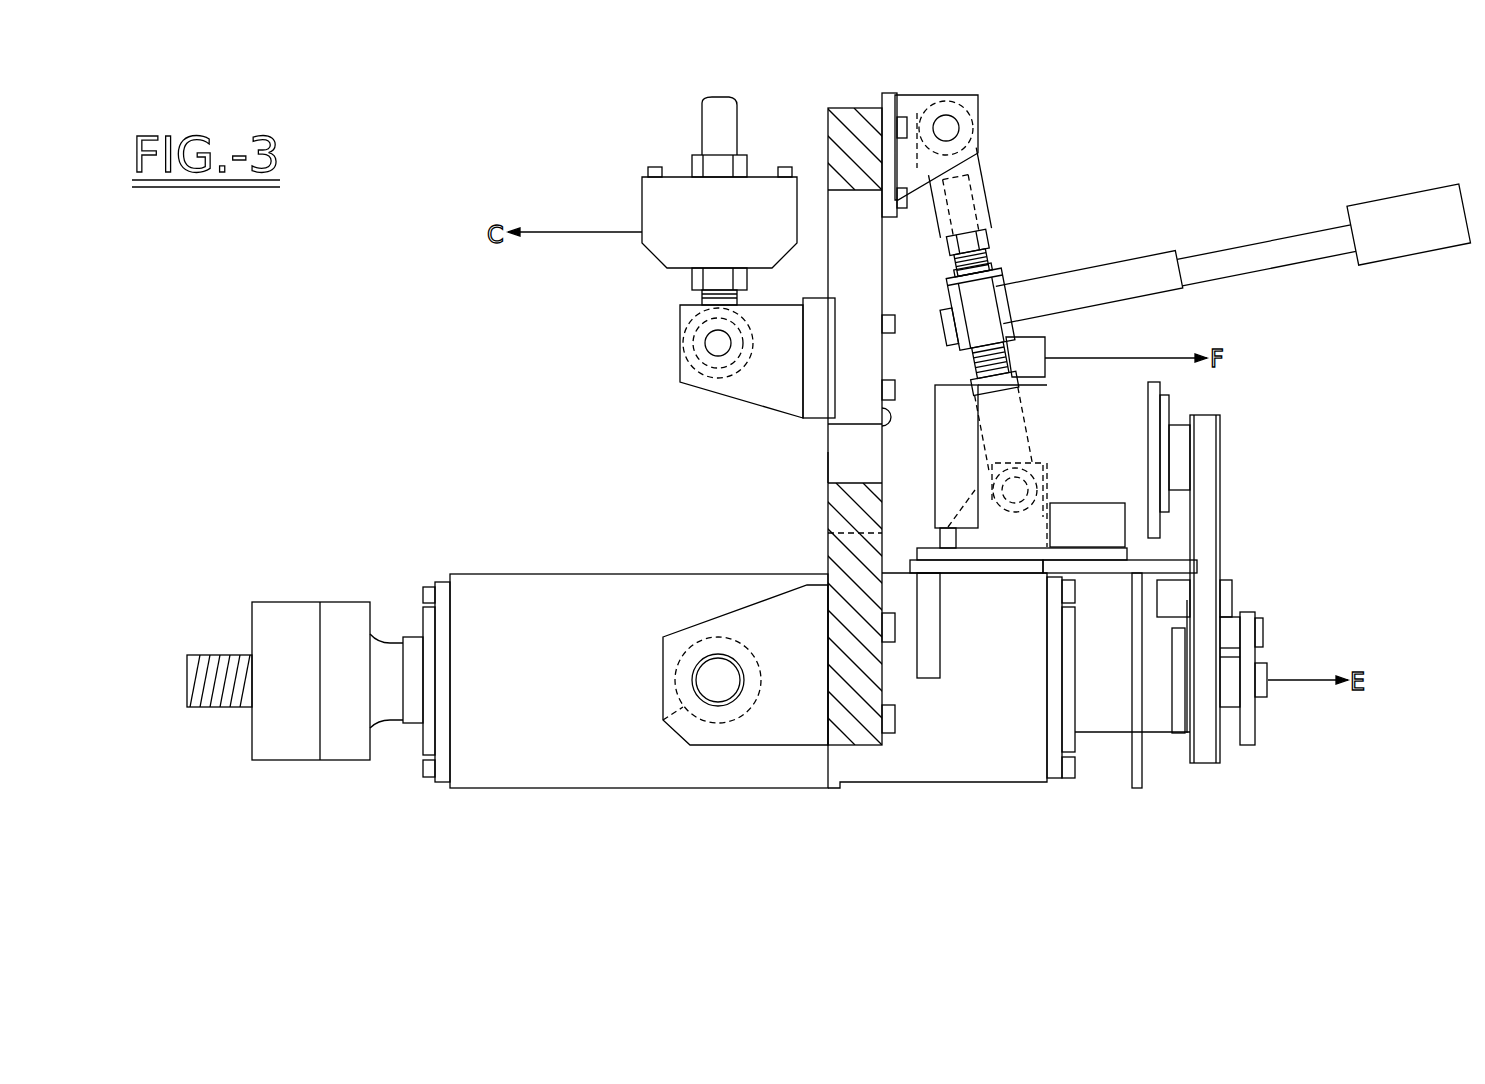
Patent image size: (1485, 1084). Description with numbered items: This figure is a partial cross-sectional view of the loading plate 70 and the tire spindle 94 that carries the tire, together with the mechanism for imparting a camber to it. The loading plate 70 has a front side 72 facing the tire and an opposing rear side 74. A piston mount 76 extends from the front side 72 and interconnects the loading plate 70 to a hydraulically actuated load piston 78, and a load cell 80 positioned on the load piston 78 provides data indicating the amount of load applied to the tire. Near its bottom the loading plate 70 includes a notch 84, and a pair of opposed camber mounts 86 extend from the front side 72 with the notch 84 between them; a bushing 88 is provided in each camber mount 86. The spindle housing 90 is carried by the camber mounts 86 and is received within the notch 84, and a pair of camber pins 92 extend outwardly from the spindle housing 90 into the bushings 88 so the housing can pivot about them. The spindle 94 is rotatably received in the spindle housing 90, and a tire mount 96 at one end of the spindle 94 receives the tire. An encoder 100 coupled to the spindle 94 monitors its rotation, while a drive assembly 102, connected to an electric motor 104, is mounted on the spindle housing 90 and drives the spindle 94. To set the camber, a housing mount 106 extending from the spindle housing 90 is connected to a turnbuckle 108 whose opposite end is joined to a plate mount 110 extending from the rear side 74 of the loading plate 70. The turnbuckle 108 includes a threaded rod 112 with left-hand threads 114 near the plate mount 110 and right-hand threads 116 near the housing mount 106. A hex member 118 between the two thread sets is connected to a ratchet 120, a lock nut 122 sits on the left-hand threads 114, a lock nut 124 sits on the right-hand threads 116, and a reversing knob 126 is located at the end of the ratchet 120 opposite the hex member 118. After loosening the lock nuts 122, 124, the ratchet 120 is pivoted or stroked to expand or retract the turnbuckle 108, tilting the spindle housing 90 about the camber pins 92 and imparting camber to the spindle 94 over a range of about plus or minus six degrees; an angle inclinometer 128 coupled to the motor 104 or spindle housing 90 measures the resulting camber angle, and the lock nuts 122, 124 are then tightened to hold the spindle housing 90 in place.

The loading plate 70 is at (826, 489).
The front side 72 is at (828, 452).
The rear side 74 is at (828, 424).
The piston mount 76 is at (723, 395).
The load piston 78 is at (708, 114).
The load cell 80 is at (642, 203).
The notch 84 is at (828, 543).
The camber mounts 86 is at (755, 747).
The bushing 88 is at (660, 720).
The spindle housing 90 is at (583, 574).
The camber pins 92 is at (697, 670).
The spindle 94 is at (397, 643).
The tire mount 96 is at (268, 602).
The encoder 100 is at (1267, 700).
The drive assembly 102 is at (1208, 568).
The electric motor 104 is at (1167, 408).
The housing mount 106 is at (1048, 468).
The turnbuckle 108 is at (995, 190).
The plate mount 110 is at (955, 95).
The threaded rod 112 is at (1005, 260).
The left-hand threads 114 is at (970, 254).
The right-hand threads 116 is at (1008, 357).
The hex member 118 is at (955, 290).
The ratchet 120 is at (1147, 257).
The lock nut 122 is at (953, 243).
The lock nut 124 is at (1018, 380).
The reversing knob 126 is at (1403, 195).
The angle inclinometer 128 is at (1005, 325).